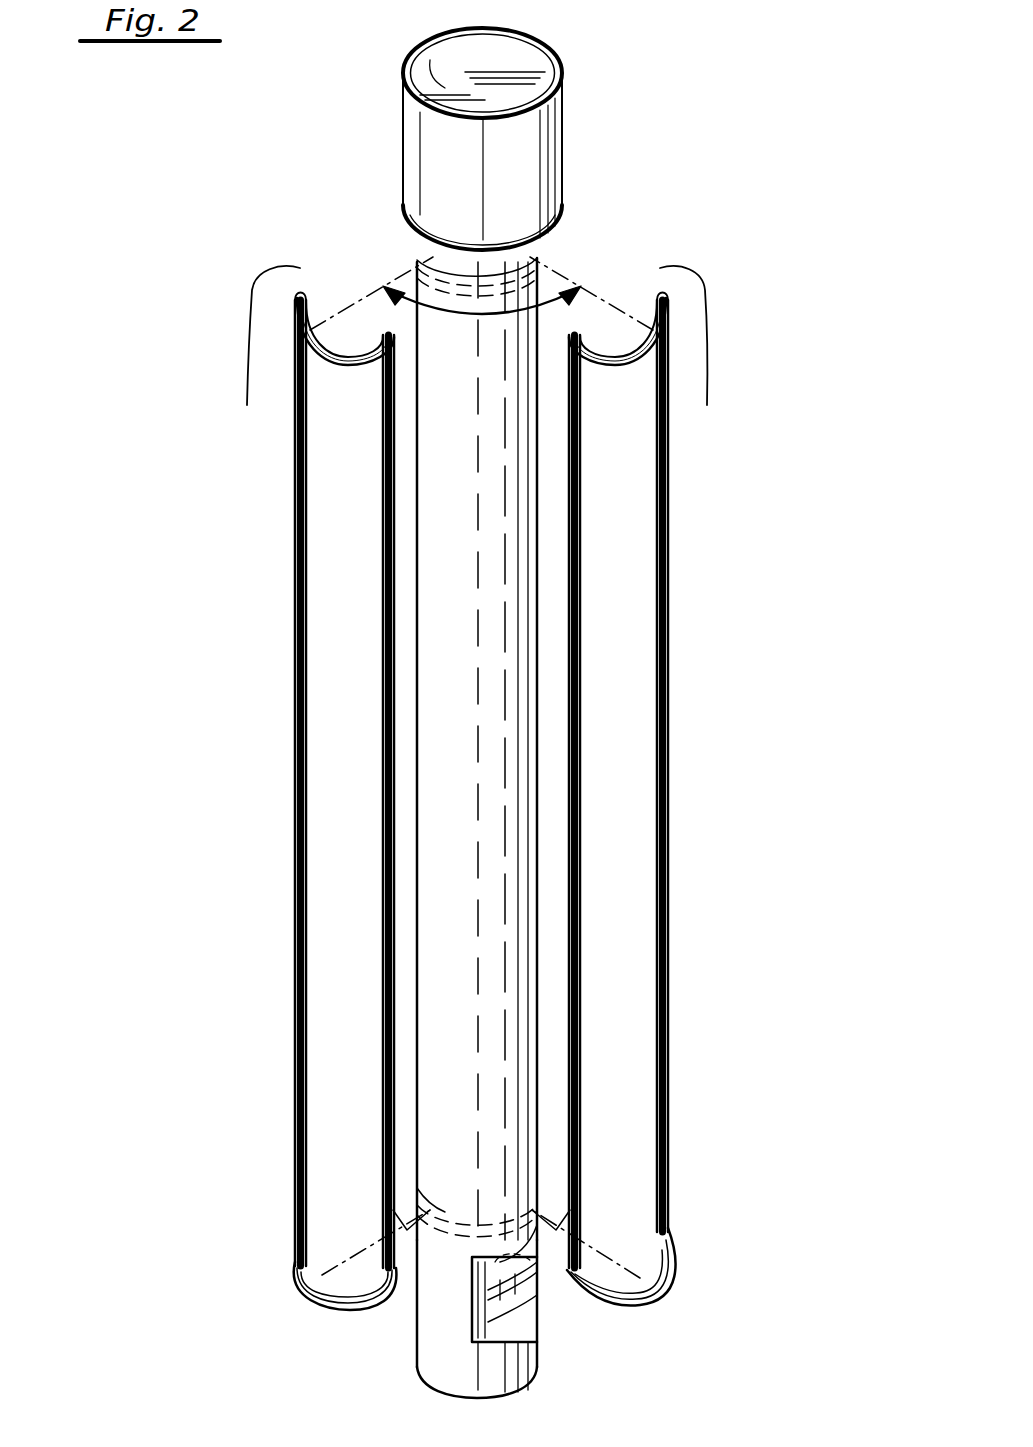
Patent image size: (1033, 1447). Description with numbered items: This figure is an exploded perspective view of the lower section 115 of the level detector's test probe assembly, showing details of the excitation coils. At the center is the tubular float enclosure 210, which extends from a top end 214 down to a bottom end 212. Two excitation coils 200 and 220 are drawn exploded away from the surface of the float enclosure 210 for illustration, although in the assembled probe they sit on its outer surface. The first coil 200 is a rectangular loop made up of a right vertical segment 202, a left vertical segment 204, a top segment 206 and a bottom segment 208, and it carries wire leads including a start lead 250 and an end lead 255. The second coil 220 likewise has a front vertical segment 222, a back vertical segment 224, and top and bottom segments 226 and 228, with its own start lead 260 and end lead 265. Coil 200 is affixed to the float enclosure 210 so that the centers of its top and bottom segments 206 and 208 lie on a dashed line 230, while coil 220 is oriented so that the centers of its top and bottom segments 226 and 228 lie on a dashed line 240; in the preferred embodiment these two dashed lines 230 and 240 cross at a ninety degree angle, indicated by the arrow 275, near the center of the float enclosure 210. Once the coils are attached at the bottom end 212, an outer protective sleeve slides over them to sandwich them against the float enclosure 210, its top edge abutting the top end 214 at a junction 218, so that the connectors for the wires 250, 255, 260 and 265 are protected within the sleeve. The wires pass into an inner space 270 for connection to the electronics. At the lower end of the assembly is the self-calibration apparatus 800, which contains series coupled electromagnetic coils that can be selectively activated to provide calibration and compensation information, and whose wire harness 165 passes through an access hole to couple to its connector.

The lower section 115 is at (738, 248).
The wire harness 165 is at (542, 1303).
The excitation coil 200 is at (276, 630).
The right vertical segment 202 is at (295, 852).
The left vertical segment 204 is at (382, 790).
The top segment 206 is at (334, 366).
The bottom segment 208 is at (292, 1291).
The float enclosure 210 is at (502, 803).
The bottom end 212 is at (540, 1360).
The top end 214 is at (560, 108).
The junction 218 is at (563, 198).
The excitation coil 220 is at (690, 584).
The front vertical segment 222 is at (578, 745).
The back vertical segment 224 is at (668, 728).
The top segment 226 is at (630, 366).
The bottom segment 228 is at (672, 1291).
The dashed line 230 is at (371, 293).
The dashed line 240 is at (560, 265).
The start lead 250 is at (250, 328).
The end lead 255 is at (437, 467).
The start lead 260 is at (704, 348).
The end lead 265 is at (518, 430).
The inner space 270 is at (443, 85).
The arrow 275 is at (512, 325).
The self-calibration apparatus 800 is at (414, 1312).